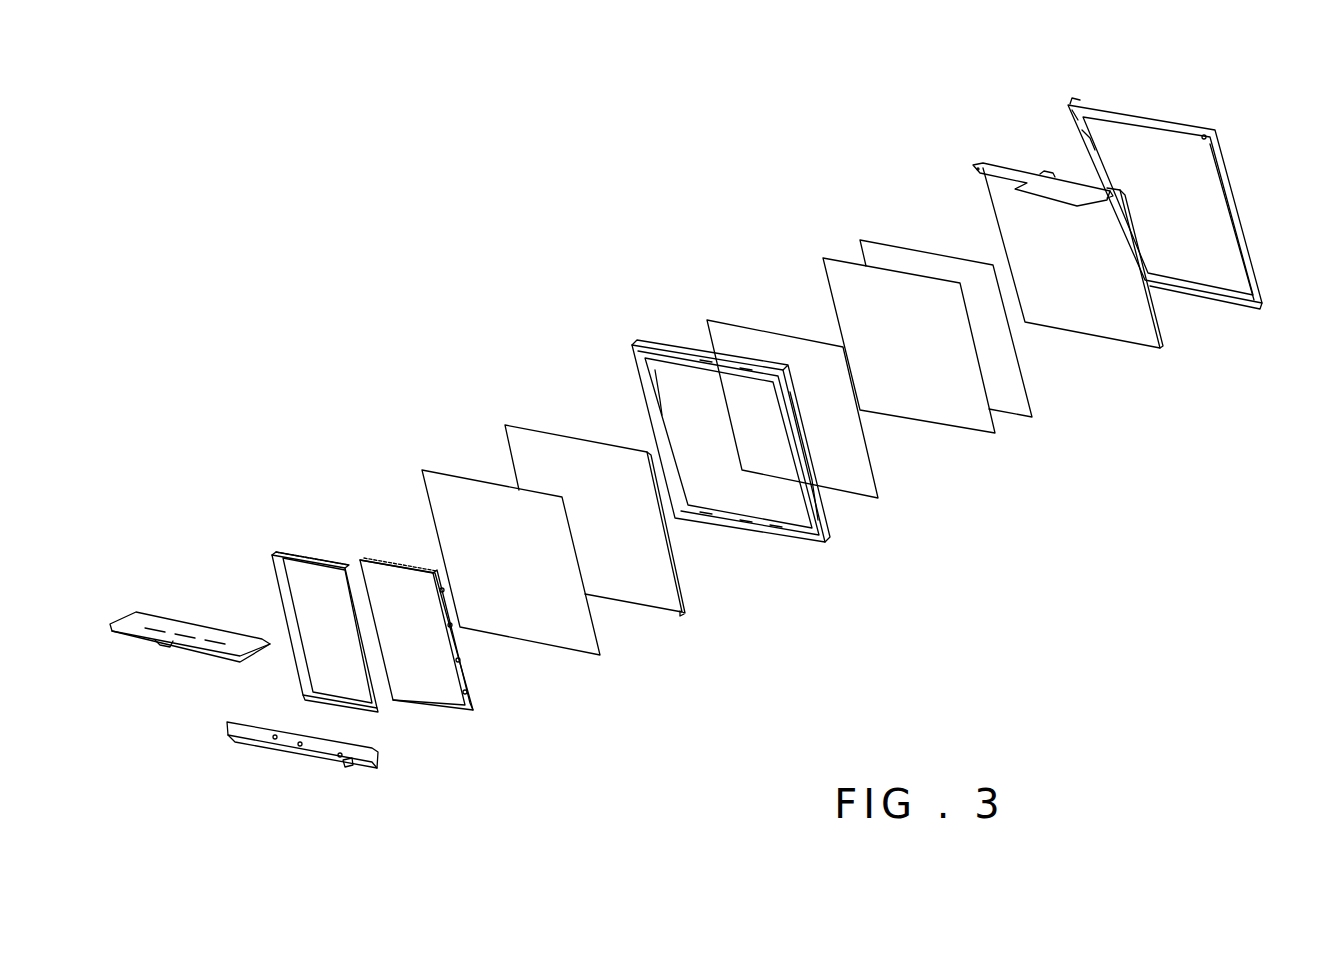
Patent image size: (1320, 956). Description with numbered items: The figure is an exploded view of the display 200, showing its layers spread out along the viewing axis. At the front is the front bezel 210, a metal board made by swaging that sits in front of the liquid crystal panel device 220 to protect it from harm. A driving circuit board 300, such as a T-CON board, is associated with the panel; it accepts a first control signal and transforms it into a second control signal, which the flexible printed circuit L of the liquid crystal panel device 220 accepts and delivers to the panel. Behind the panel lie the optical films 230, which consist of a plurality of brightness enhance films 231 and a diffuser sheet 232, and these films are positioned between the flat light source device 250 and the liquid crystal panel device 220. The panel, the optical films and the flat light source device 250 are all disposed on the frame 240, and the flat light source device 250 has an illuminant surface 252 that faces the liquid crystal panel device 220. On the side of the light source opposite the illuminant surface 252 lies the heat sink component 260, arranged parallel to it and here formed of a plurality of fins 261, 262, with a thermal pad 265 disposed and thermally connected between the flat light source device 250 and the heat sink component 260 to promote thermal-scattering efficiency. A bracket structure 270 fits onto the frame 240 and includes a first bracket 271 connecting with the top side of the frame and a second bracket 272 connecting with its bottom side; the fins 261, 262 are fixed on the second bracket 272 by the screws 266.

The display 200 is at (290, 135).
The front bezel 210 is at (1226, 291).
The liquid crystal panel device 220 is at (1125, 333).
The driving circuit board 300 is at (990, 163).
The flexible printed circuit L is at (1046, 170).
The optical films 230 is at (884, 409).
The brightness enhance films 231 is at (1017, 403).
The diffuser sheet 232 is at (826, 429).
The frame 240 is at (647, 345).
The flat light source device 250 is at (626, 529).
The illuminant surface 252 is at (685, 600).
The thermal pad 265 is at (447, 482).
The heat sink component 260 is at (372, 589).
The fin 261 is at (300, 567).
The fin 262 is at (411, 611).
The bracket structure 270 is at (285, 711).
The first bracket 271 is at (207, 640).
The second bracket 272 is at (282, 747).
The screws 266 is at (347, 763).